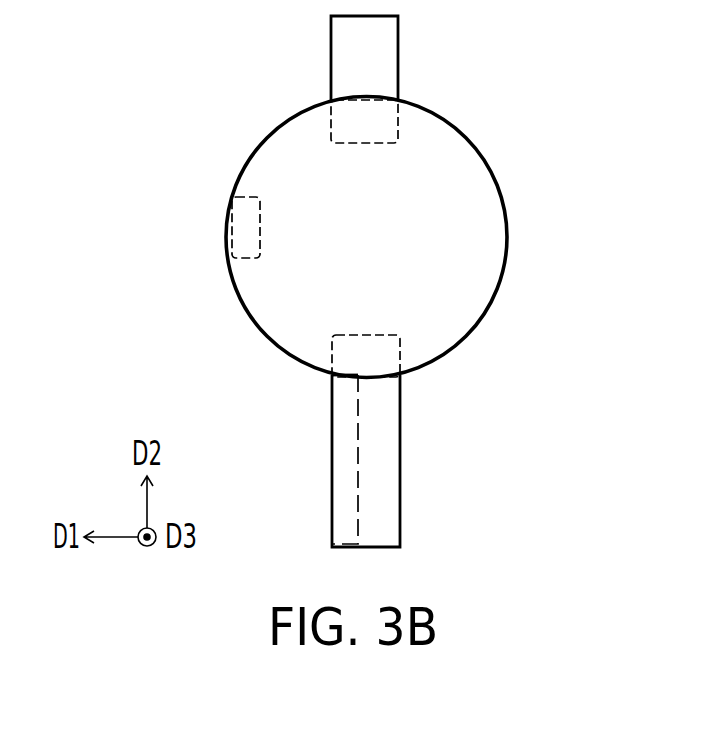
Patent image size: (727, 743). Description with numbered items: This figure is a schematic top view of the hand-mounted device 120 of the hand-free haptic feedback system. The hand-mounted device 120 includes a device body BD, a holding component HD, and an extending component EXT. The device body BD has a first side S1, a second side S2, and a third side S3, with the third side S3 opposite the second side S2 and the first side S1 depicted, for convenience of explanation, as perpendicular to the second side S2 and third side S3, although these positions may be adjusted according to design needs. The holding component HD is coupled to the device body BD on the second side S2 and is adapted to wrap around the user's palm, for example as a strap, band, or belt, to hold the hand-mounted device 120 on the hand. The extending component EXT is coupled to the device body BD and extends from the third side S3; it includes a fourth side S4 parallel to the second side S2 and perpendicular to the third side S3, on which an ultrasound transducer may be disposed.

The hand-mounted device 120 is at (602, 555).
The device body BD is at (480, 212).
The holding component HD is at (352, 39).
The extending component EXT is at (385, 462).
The first side S1 is at (243, 191).
The second side S2 is at (398, 122).
The third side S3 is at (397, 357).
The fourth side S4 is at (343, 468).